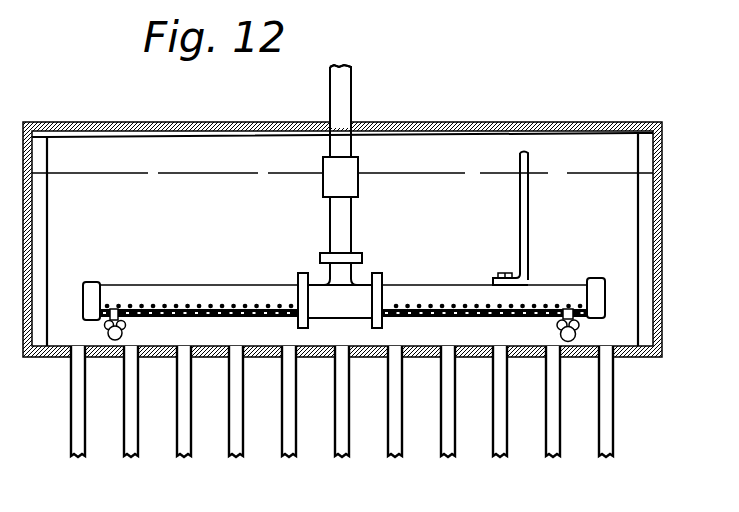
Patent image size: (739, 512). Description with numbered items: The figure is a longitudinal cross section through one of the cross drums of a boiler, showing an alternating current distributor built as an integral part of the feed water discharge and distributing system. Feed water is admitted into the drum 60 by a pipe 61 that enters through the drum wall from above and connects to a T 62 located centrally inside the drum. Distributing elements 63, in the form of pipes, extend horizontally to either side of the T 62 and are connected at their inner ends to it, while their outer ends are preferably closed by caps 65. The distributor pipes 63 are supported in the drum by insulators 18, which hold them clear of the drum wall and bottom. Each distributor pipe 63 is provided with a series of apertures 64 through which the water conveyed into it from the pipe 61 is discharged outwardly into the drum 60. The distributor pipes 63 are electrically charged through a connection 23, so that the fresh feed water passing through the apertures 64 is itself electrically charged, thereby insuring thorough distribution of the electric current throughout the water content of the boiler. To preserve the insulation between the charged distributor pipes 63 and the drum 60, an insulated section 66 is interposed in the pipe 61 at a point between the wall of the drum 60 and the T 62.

The drum 60 is at (237, 122).
The pipe 61 is at (352, 72).
The insulated section 66 is at (352, 163).
The connection 23 is at (528, 157).
The T 62 is at (358, 283).
The distributing elements 63 is at (152, 290).
The apertures 64 is at (267, 305).
The caps 65 is at (93, 282).
The insulators 18 is at (130, 334).